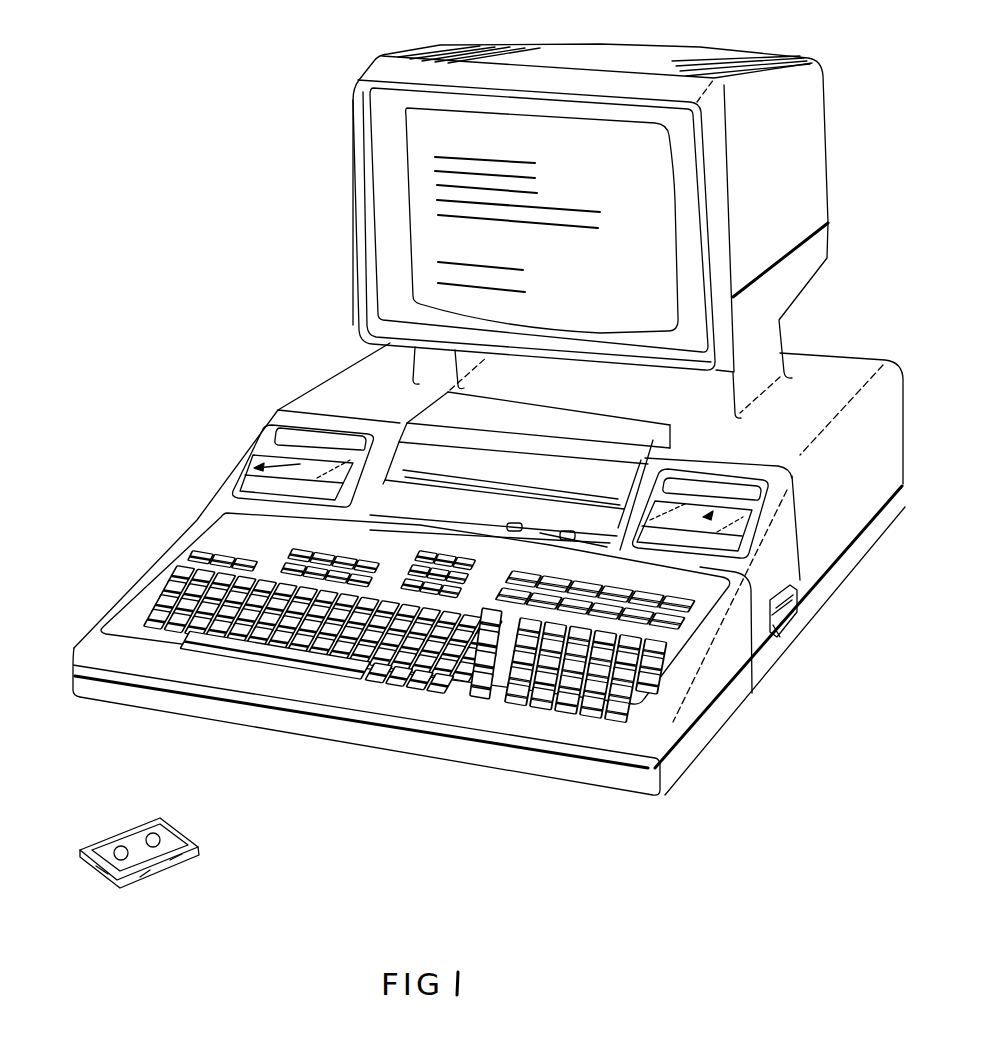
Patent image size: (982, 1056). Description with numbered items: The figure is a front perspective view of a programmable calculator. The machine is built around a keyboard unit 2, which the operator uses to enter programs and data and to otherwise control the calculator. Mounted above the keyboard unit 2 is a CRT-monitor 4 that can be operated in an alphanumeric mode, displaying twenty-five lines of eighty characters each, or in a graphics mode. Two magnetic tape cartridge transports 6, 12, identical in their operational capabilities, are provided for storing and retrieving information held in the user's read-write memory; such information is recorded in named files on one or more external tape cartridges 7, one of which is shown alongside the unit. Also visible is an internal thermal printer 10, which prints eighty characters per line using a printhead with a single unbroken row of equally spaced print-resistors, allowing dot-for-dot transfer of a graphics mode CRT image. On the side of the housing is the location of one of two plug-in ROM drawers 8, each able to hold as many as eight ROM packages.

The keyboard unit 2 is at (417, 681).
The CRT-monitor 4 is at (617, 62).
The magnetic tape cartridge transport 6 is at (703, 517).
The external tape cartridge 7 is at (168, 838).
The plug-in ROM drawer 8 is at (771, 655).
The internal thermal printer 10 is at (556, 474).
The magnetic tape cartridge transport 12 is at (268, 452).